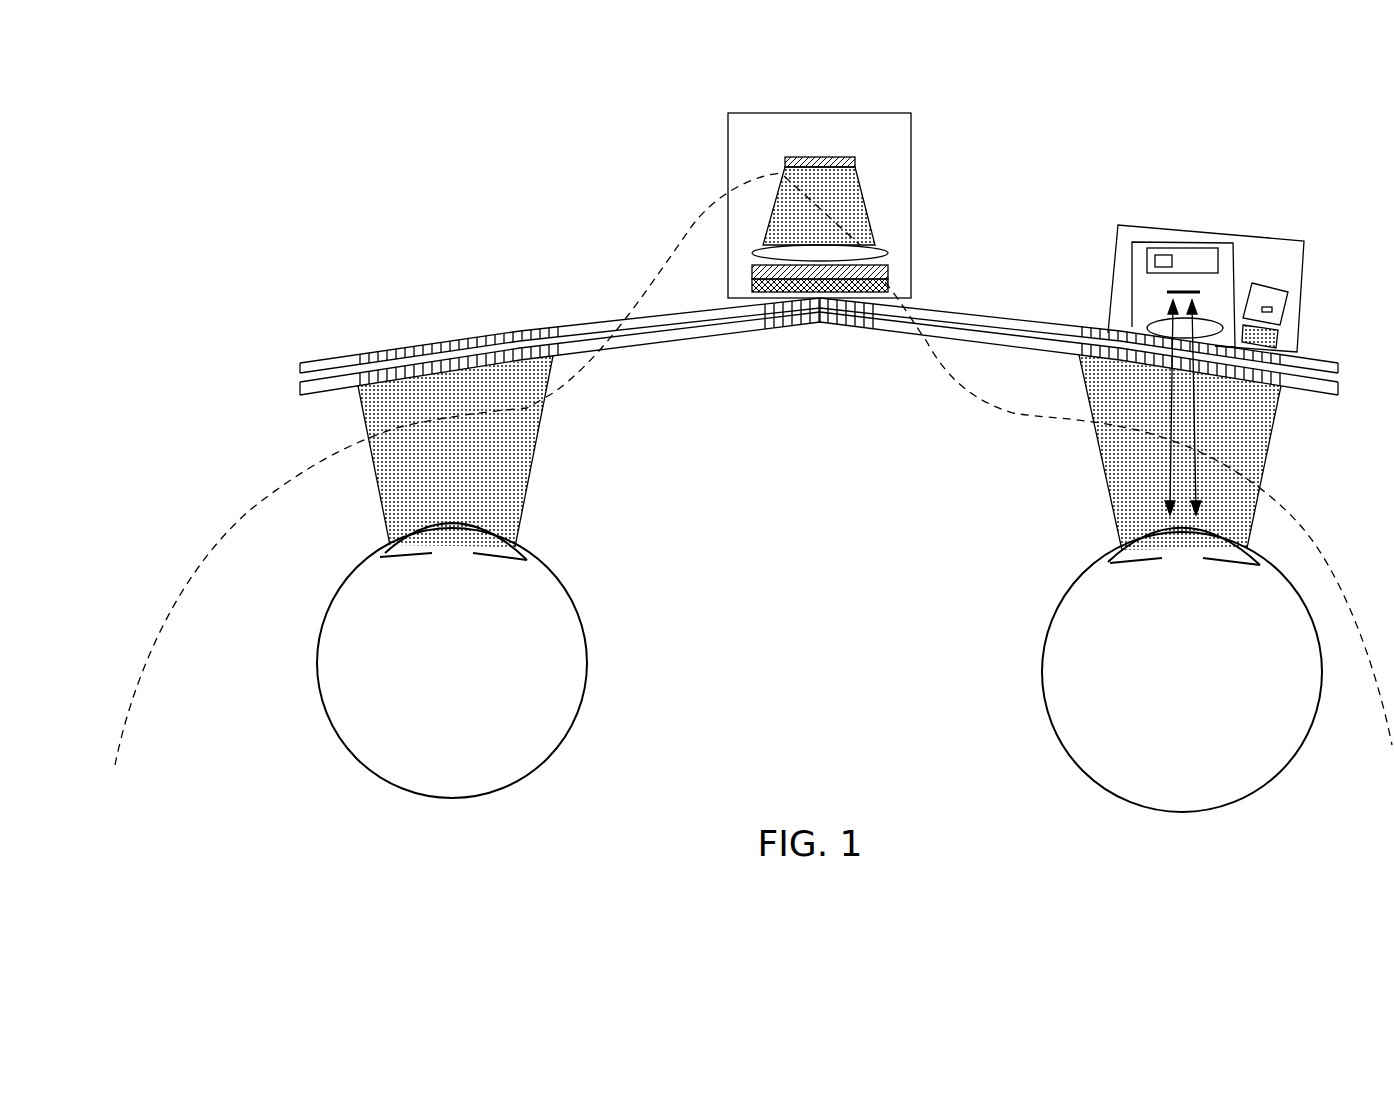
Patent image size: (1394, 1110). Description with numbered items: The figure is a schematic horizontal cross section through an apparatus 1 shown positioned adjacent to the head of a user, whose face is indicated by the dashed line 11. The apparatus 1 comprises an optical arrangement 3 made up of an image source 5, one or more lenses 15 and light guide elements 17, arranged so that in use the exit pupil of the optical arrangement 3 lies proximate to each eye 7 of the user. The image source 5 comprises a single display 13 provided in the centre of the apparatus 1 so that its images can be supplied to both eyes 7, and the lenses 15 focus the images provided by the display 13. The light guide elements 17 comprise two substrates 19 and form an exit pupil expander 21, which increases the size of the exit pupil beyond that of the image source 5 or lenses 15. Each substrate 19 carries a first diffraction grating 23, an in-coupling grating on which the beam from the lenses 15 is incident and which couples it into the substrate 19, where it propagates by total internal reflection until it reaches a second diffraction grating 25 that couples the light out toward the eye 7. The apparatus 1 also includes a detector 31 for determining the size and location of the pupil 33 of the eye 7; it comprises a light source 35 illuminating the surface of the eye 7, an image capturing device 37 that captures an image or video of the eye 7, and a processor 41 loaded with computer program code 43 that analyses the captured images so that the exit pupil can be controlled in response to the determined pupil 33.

The apparatus 1 is at (940, 185).
The optical arrangement 3 is at (820, 335).
The image source 5 is at (805, 157).
The eye 7 is at (592, 665).
The dashed line 11 is at (754, 474).
The display 13 is at (855, 165).
The lenses 15 is at (890, 280).
The light guide element 17 is at (678, 350).
The substrate 19 is at (580, 322).
The exit pupil expander 21 is at (655, 312).
The first diffraction grating 23 is at (770, 322).
The second diffraction grating 25 is at (370, 355).
The detector 31 is at (1290, 252).
The pupil 33 is at (528, 546).
The light source 35 is at (1295, 305).
The image capturing device 37 is at (1225, 250).
The processor 41 is at (1205, 258).
The computer program code 43 is at (1165, 257).